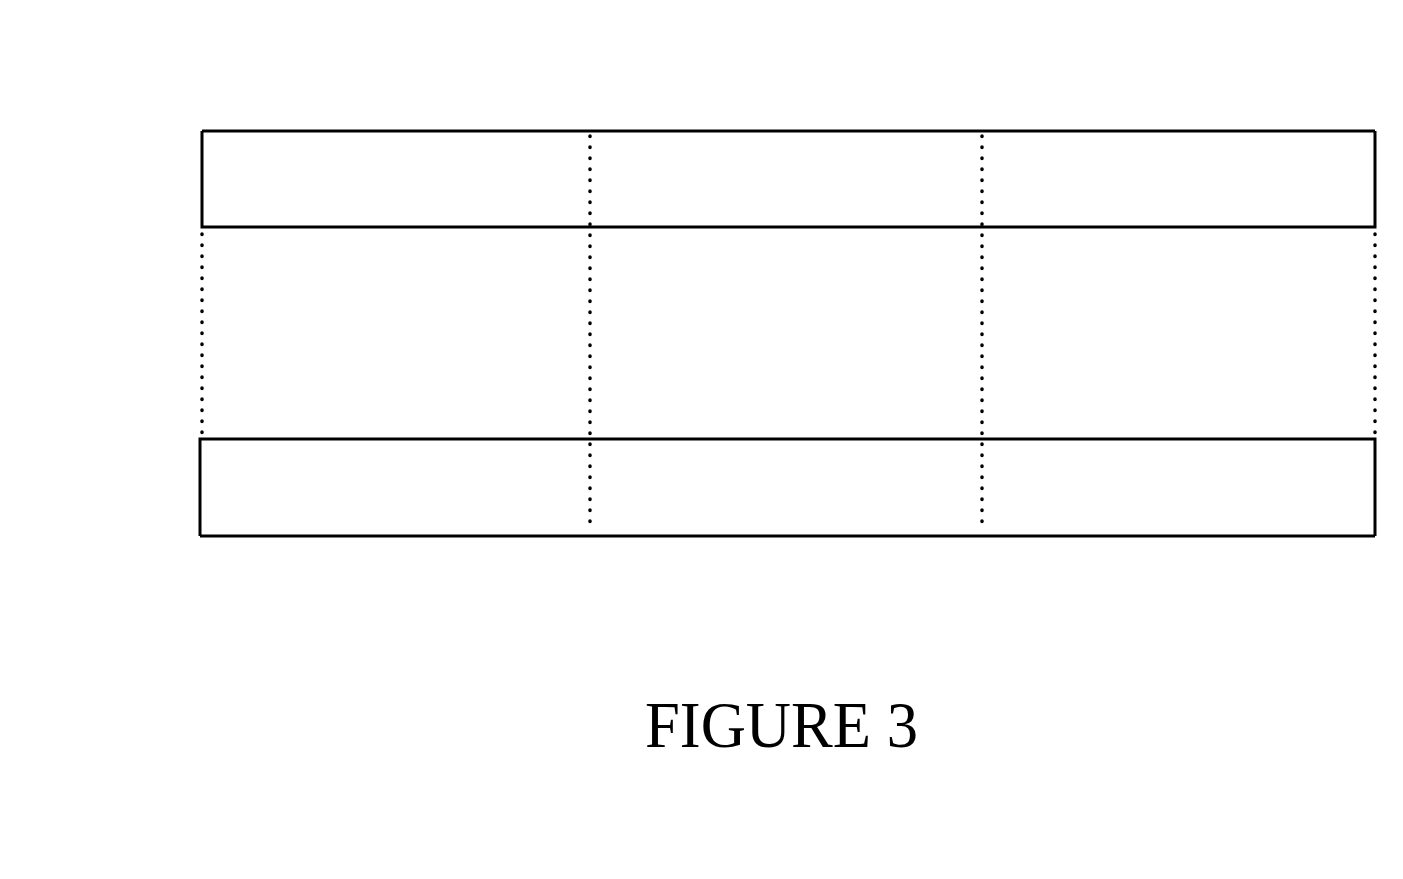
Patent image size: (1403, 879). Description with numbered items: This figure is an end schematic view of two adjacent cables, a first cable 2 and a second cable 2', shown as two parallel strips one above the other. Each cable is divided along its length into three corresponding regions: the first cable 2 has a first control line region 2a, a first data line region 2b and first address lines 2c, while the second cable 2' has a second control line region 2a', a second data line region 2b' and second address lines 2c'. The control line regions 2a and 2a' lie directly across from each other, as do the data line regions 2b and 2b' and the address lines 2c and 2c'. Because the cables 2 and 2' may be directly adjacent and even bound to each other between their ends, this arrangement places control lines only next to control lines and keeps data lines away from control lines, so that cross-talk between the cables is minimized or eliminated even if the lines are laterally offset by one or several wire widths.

The first cable 2 is at (705, 179).
The second cable 2' is at (705, 487).
The first control line region 2a is at (396, 67).
The first data line region 2b is at (786, 67).
The first address lines 2c is at (1178, 67).
The second control line region 2a' is at (395, 604).
The second data line region 2b' is at (786, 604).
The second address lines 2c' is at (1178, 604).